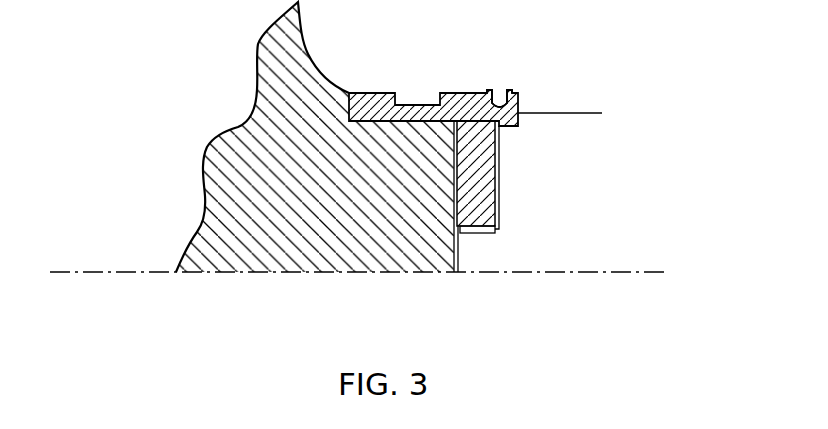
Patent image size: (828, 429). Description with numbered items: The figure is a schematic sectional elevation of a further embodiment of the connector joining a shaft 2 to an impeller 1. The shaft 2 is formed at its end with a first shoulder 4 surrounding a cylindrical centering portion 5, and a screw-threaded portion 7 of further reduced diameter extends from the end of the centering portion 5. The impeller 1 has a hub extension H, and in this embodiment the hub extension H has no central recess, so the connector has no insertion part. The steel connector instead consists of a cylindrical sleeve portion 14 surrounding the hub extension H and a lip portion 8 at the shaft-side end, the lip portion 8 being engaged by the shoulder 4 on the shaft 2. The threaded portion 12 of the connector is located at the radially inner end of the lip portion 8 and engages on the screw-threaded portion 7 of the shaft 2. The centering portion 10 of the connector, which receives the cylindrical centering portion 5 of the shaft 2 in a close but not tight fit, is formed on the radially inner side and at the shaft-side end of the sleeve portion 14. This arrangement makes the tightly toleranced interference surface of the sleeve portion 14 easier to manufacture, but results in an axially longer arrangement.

The impeller 1 is at (203, 106).
The shaft 2 is at (652, 205).
The first shoulder 4 is at (529, 111).
The cylindrical centering portion 5 is at (510, 163).
The screw-threaded portion 7 is at (482, 253).
The lip portion 8 is at (478, 182).
The centering portion 10 is at (504, 104).
The threaded portion 12 is at (485, 217).
The cylindrical sleeve portion 14 is at (375, 103).
The hub extension H is at (383, 245).